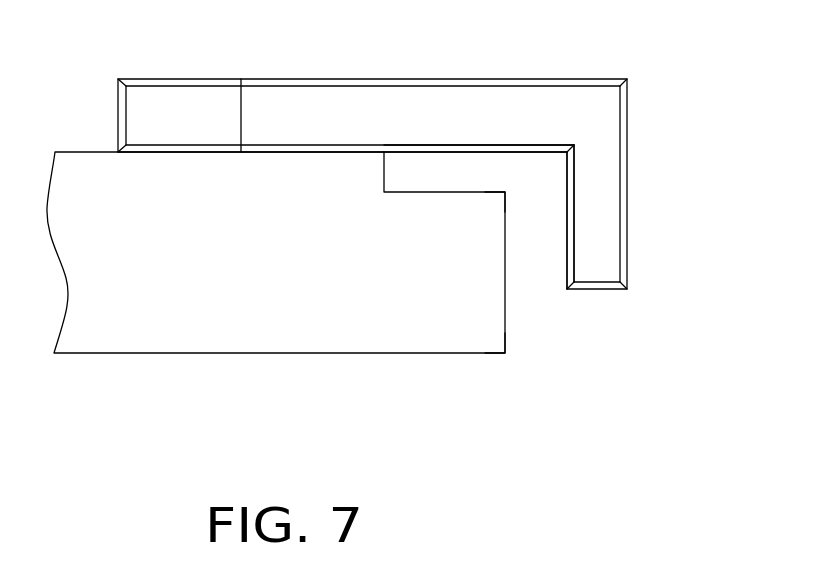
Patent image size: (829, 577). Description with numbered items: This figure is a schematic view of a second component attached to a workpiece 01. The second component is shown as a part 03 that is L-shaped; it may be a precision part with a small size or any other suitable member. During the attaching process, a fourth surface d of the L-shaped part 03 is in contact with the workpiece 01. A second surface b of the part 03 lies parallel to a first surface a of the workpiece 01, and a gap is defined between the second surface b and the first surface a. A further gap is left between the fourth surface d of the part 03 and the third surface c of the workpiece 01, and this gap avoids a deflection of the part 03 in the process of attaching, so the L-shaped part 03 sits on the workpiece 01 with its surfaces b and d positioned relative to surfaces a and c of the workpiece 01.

The workpiece 01 is at (312, 340).
The part 03 is at (608, 134).
The first surface a is at (506, 339).
The second surface b is at (569, 242).
The third surface c is at (472, 193).
The fourth surface d is at (480, 153).